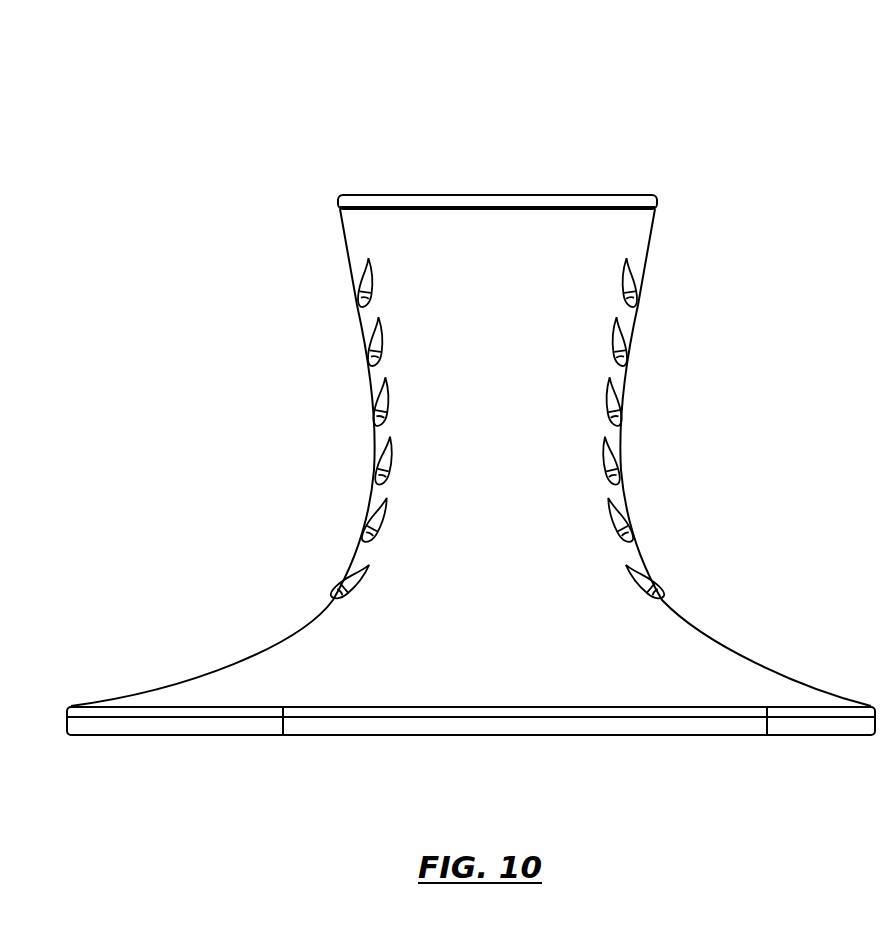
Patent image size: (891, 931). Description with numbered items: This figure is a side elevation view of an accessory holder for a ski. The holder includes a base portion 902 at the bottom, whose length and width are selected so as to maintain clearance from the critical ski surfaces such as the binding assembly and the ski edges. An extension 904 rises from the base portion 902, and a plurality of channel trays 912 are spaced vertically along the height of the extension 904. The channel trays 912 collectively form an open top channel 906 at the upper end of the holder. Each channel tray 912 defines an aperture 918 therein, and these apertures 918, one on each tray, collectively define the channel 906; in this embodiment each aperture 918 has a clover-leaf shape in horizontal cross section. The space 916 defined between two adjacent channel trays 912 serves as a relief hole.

The base portion 902 is at (300, 704).
The extension 904 is at (511, 438).
The open top channel 906 is at (545, 167).
The channel trays 912 is at (347, 576).
The space 916 is at (636, 558).
The aperture 918 is at (493, 180).